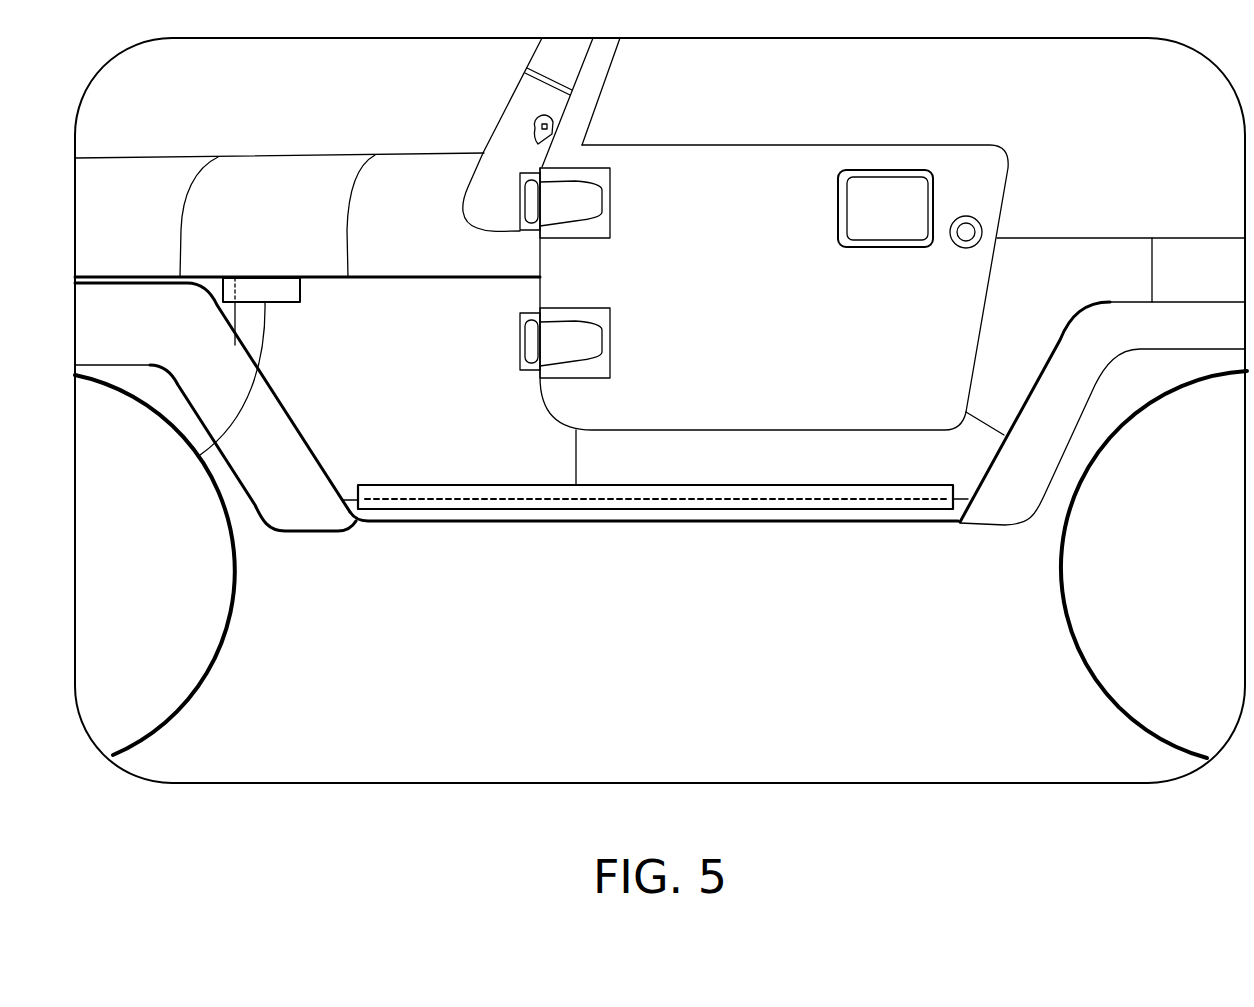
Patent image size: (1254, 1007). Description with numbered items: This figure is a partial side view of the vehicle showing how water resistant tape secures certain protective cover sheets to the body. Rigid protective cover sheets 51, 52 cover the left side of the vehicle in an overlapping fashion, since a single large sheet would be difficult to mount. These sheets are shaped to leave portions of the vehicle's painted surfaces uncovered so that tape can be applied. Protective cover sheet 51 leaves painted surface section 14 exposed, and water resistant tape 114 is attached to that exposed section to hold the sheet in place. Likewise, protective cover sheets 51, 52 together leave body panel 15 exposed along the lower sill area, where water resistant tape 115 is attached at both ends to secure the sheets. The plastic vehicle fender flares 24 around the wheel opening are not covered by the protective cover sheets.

The painted surface section 14 is at (212, 287).
The water resistant tape 114 is at (215, 440).
The protective cover sheet 51 is at (348, 423).
The vehicle fender flare 24 is at (280, 512).
The protective cover sheet 52 is at (758, 458).
The body panel 15 is at (601, 512).
The water resistant tape 115 is at (358, 491).